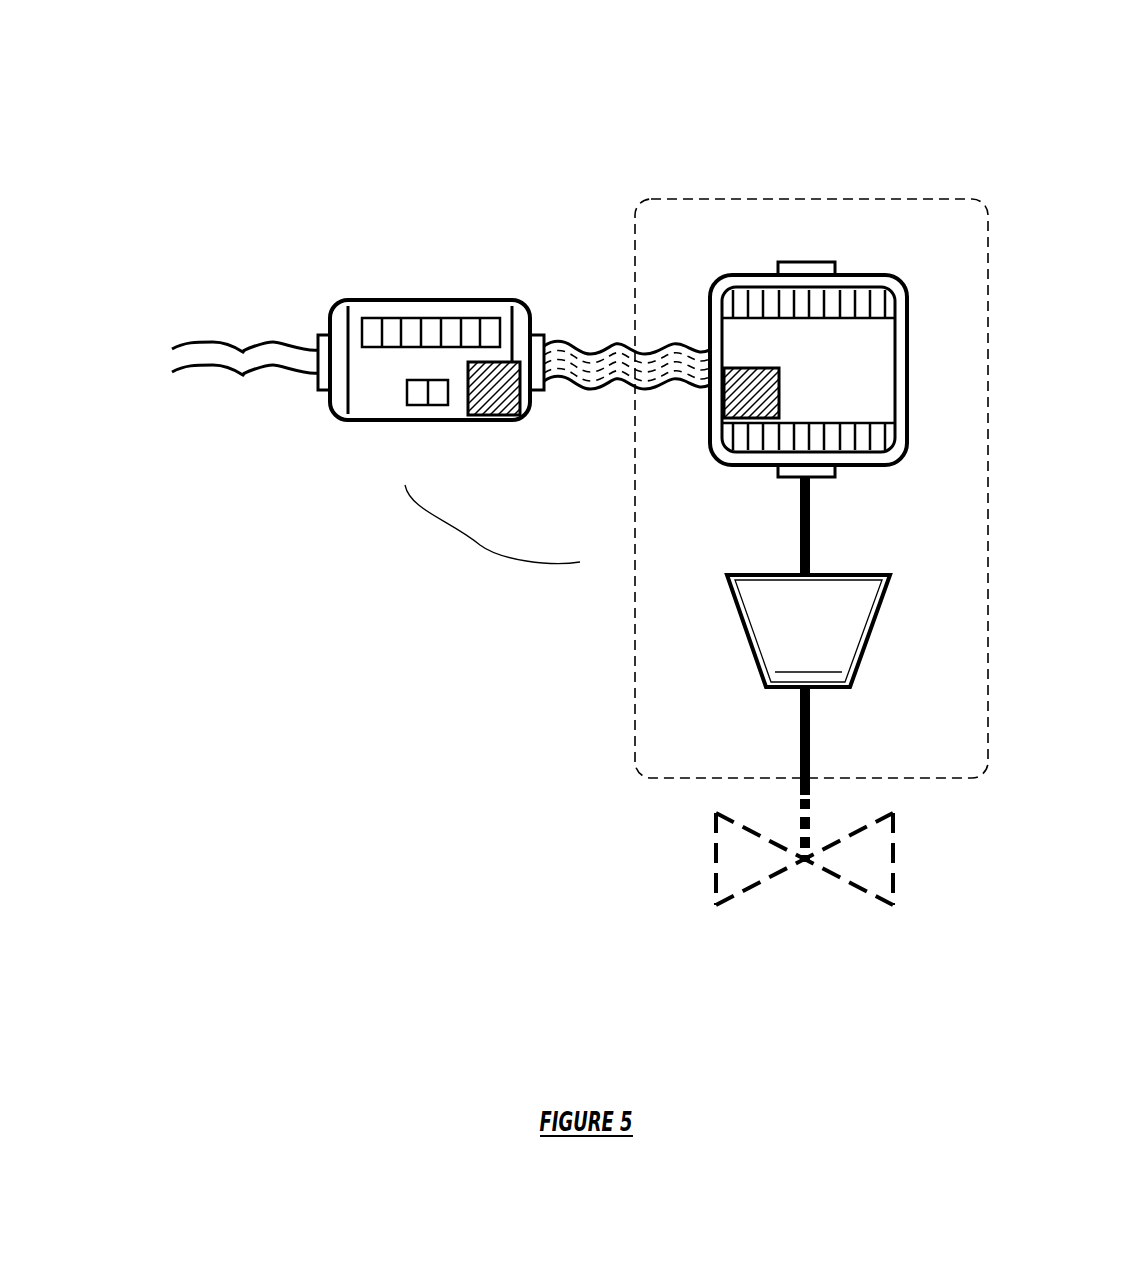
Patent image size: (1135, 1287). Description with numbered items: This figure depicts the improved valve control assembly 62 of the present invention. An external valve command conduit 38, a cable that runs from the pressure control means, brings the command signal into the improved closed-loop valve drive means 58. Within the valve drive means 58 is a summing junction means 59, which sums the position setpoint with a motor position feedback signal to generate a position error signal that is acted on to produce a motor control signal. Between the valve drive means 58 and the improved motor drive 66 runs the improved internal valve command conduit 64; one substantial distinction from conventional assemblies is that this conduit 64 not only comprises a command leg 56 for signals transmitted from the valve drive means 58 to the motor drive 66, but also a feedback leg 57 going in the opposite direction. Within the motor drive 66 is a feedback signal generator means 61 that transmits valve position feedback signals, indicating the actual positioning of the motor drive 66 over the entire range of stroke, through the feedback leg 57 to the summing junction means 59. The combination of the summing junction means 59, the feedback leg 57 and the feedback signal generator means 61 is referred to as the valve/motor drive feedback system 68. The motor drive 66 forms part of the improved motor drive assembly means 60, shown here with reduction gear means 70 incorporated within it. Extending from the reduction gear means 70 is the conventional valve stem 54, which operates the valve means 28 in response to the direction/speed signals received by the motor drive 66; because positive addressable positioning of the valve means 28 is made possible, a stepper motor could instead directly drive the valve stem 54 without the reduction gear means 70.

The valve means 28 is at (876, 893).
The external valve command conduit 38 is at (237, 345).
The valve stem 54 is at (750, 778).
The command leg 56 is at (565, 345).
The feedback leg 57 is at (613, 386).
The improved closed-loop valve drive means 58 is at (423, 300).
The summing junction means 59 is at (487, 418).
The improved motor drive assembly means 60 is at (986, 778).
The feedback signal generator means 61 is at (720, 462).
The improved valve control assembly 62 is at (866, 97).
The improved internal valve command conduit 64 is at (616, 346).
The improved motor drive 66 is at (806, 262).
The valve/motor drive feedback system 68 is at (480, 545).
The reduction gear means 70 is at (742, 622).